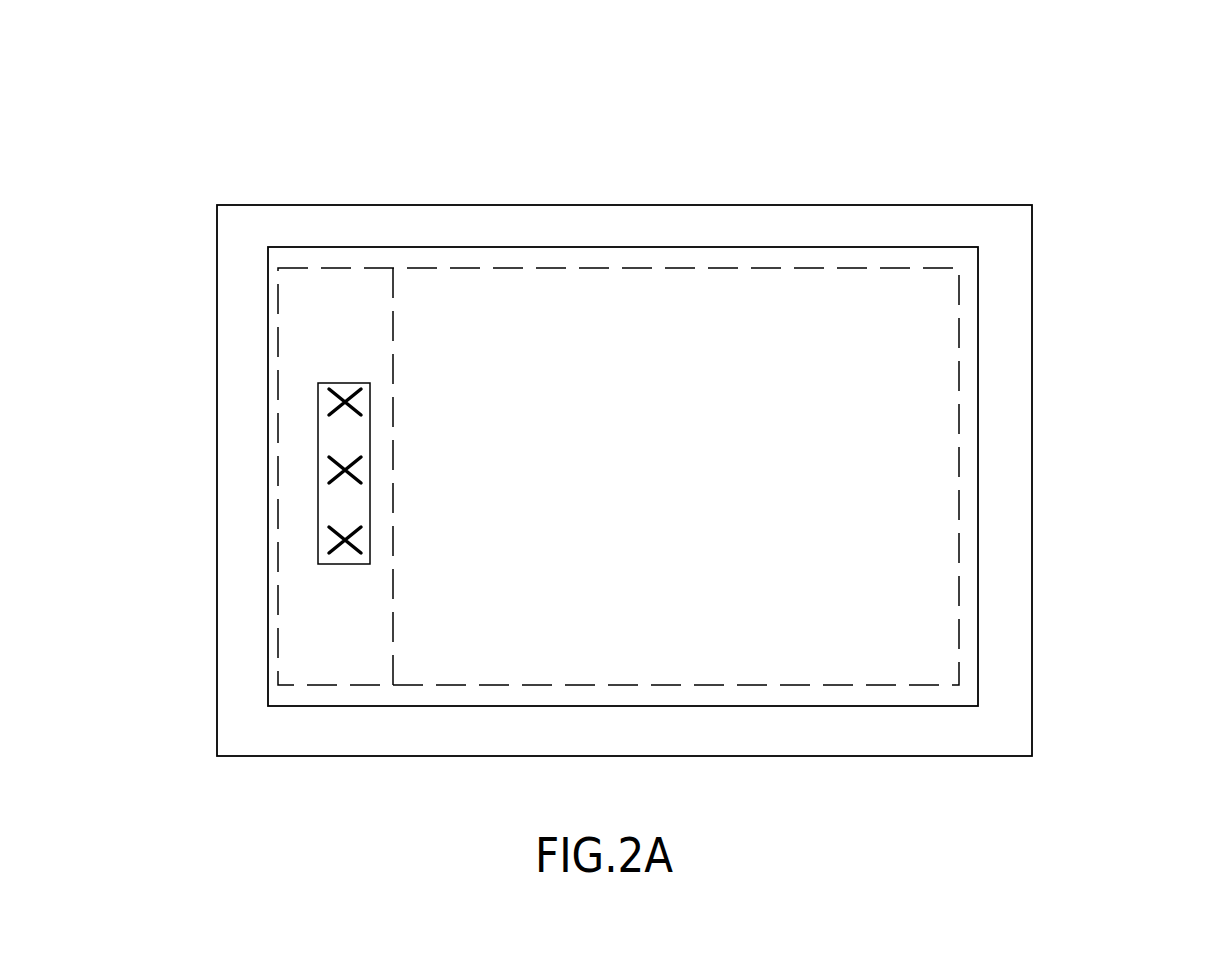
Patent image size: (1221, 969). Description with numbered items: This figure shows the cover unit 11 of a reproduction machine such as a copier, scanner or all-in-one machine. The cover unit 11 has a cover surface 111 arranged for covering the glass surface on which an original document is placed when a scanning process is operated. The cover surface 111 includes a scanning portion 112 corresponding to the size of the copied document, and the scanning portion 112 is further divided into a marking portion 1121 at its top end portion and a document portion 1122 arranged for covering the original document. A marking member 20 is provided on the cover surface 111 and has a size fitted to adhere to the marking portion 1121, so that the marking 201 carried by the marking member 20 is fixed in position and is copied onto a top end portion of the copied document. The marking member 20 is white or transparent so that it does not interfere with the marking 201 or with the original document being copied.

The cover unit 11 is at (1002, 370).
The cover surface 111 is at (897, 288).
The scanning portion 112 is at (526, 146).
The marking portion 1121 is at (323, 299).
The document portion 1122 is at (521, 301).
The marking member 20 is at (325, 512).
The marking 201 is at (323, 383).